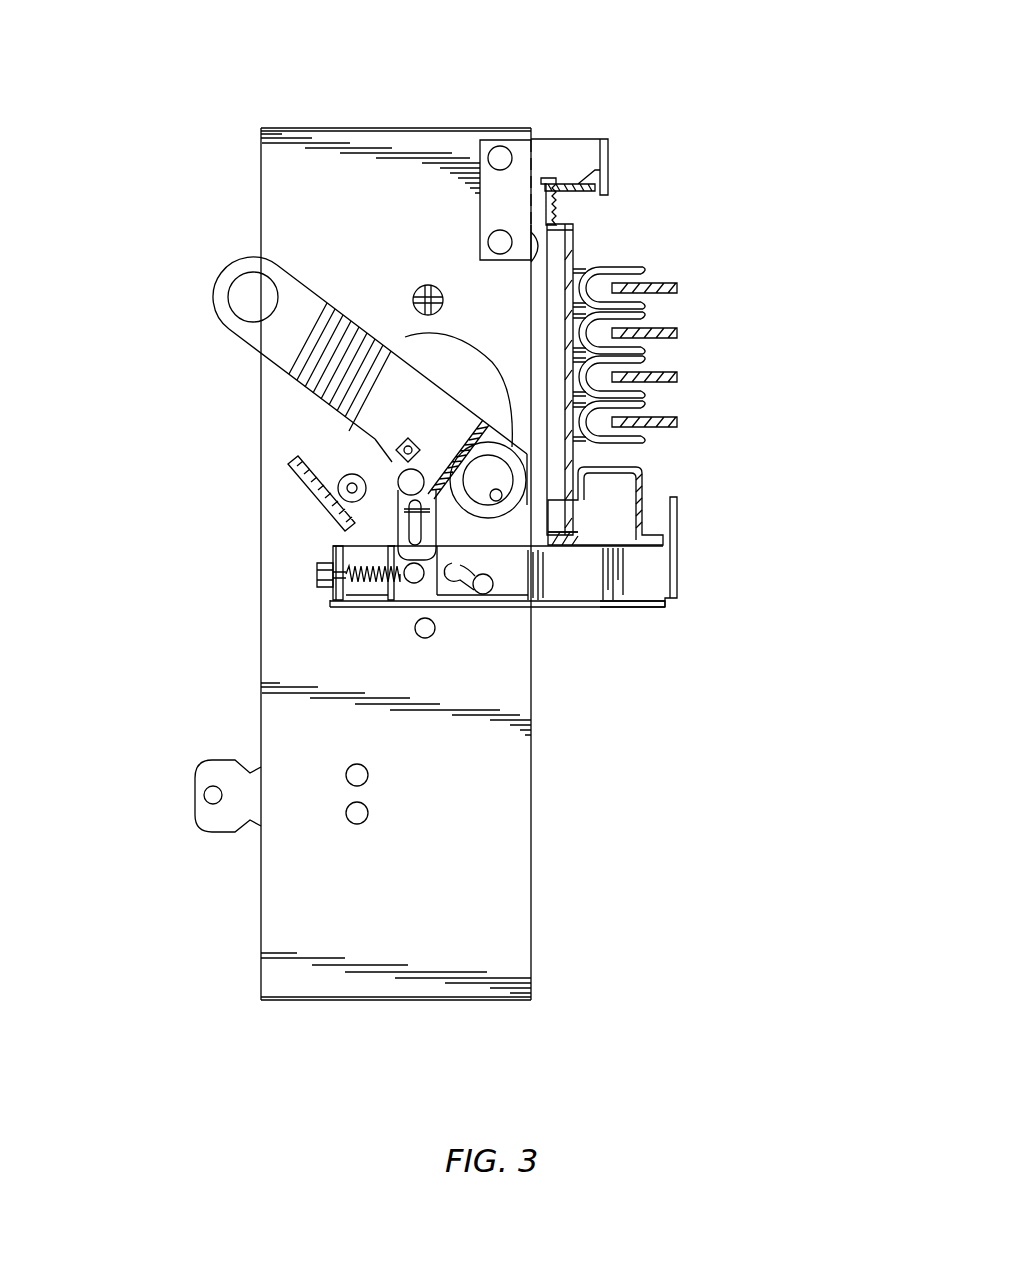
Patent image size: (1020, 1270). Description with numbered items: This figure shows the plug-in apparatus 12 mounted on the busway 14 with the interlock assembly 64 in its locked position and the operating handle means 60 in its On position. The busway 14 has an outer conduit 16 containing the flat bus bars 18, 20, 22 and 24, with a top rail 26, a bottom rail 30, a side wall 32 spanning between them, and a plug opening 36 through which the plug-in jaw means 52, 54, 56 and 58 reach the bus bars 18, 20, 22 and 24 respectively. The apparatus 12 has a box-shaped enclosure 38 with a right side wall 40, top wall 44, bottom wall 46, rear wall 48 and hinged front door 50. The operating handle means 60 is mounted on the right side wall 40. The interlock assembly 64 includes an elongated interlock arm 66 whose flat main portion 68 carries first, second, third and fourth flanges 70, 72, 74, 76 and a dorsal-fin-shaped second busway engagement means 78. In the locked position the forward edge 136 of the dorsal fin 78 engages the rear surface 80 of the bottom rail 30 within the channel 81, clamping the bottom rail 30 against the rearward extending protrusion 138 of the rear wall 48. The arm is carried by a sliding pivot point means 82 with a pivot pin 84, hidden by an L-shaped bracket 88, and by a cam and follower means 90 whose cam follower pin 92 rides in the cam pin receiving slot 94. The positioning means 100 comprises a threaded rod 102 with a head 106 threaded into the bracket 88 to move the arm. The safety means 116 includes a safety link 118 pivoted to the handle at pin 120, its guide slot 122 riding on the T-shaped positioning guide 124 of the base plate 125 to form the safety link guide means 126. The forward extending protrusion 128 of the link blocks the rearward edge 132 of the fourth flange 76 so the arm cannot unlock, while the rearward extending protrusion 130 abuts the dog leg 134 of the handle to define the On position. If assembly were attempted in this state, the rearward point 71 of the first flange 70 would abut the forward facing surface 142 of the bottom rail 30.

The plug-in apparatus 12 is at (423, 100).
The busway 14 is at (650, 545).
The outer conduit 16 is at (690, 379).
The electrical conductor 18 is at (676, 290).
The electrical conductor 20 is at (676, 335).
The electrical conductor 22 is at (678, 378).
The electrical conductor 24 is at (665, 424).
The top rail 26 is at (558, 187).
The bottom rail 30 is at (572, 542).
The side wall 32 is at (690, 379).
The plug opening 36 is at (573, 462).
The enclosure 38 is at (405, 568).
The right side wall 40 is at (405, 568).
The top wall 44 is at (318, 128).
The bottom wall 46 is at (497, 1001).
The rear wall 48 is at (533, 872).
The hinged front door 50 is at (261, 713).
The plug-in jaw means 52 is at (617, 270).
The plug-in jaw means 54 is at (637, 313).
The plug-in jaw means 56 is at (637, 358).
The plug-in jaw means 58 is at (622, 446).
The operating handle means 60 is at (250, 343).
The interlock assembly 64 is at (441, 616).
The interlock arm 66 is at (657, 625).
The main portion 68 is at (645, 604).
The first flange 70 is at (678, 530).
The rearward point 71 is at (645, 482).
The second flange 72 is at (604, 550).
The third flange 74 is at (333, 596).
The fourth flange 76 is at (338, 542).
The second busway engagement means 78 is at (593, 533).
The rear surface 80 is at (580, 479).
The channel 81 is at (618, 477).
The sliding pivot point means 82 is at (379, 605).
The pivot pin 84 is at (418, 582).
The L-shaped bracket 88 is at (462, 581).
The cam and follower means 90 is at (500, 610).
The cam follower pin 92 is at (490, 593).
The cam pin receiving slot 94 is at (437, 597).
The positioning means 100 is at (227, 563).
The threaded rod 102 is at (227, 563).
The head 106 is at (323, 567).
The safety means 116 is at (303, 500).
The safety link 118 is at (397, 477).
The pin 120 is at (345, 478).
The guide slot 122 is at (443, 532).
The positioning guide 124 is at (303, 514).
The base plate 125 is at (413, 347).
The safety link guide means 126 is at (303, 514).
The forward extending protrusion 128 is at (400, 504).
The rearward extending protrusion 130 is at (427, 470).
The rearward edge 132 is at (378, 540).
The dog leg 134 is at (470, 440).
The forward edge 136 is at (582, 490).
The rearward extending protrusion 138 is at (543, 563).
The forward facing surface 142 is at (521, 447).